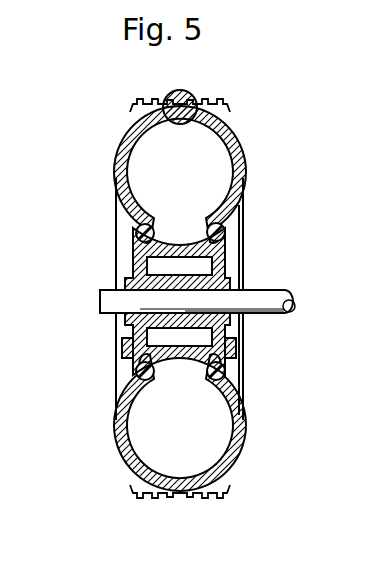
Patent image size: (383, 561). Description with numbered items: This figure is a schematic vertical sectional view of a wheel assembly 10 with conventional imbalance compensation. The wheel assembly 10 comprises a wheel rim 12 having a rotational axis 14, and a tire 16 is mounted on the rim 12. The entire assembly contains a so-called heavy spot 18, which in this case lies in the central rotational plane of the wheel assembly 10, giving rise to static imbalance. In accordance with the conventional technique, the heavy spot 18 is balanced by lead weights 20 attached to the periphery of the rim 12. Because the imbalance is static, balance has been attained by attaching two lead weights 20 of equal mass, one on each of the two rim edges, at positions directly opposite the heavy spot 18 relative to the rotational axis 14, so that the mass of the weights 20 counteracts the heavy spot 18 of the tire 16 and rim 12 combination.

The wheel assembly 10 is at (102, 183).
The wheel rim 12 is at (132, 262).
The rotational axis 14 is at (262, 289).
The tire 16 is at (117, 445).
The heavy spot 18 is at (197, 97).
The lead weights 20 is at (121, 348).